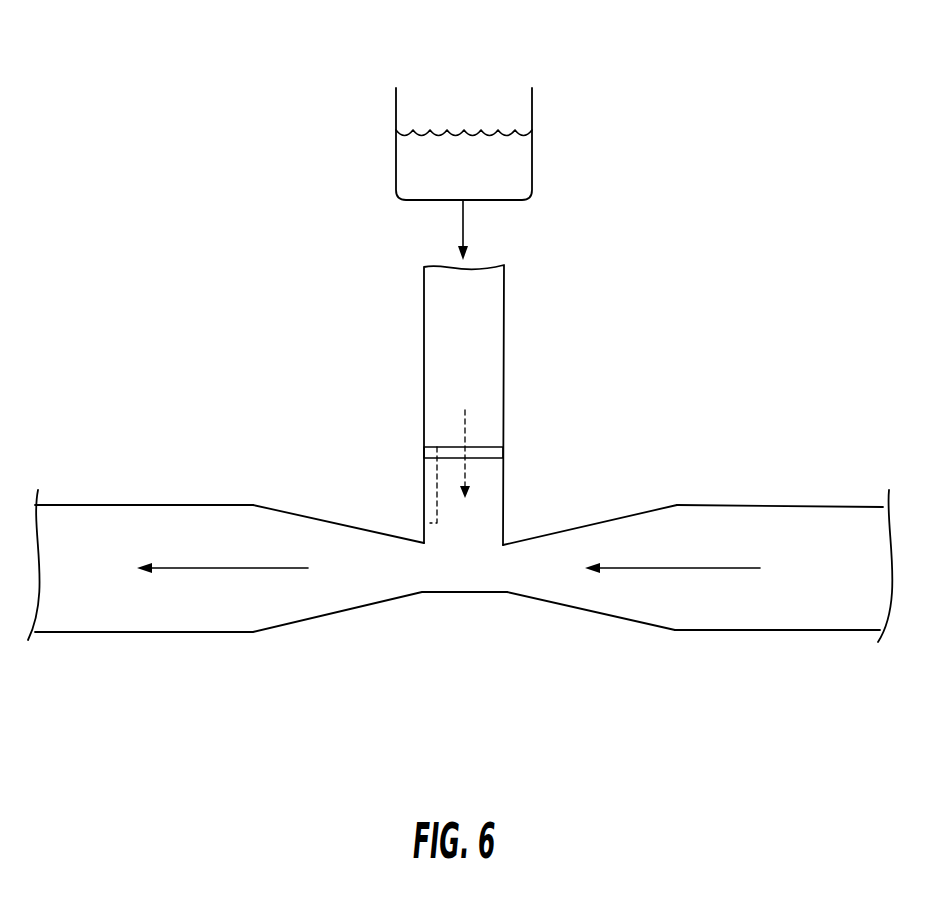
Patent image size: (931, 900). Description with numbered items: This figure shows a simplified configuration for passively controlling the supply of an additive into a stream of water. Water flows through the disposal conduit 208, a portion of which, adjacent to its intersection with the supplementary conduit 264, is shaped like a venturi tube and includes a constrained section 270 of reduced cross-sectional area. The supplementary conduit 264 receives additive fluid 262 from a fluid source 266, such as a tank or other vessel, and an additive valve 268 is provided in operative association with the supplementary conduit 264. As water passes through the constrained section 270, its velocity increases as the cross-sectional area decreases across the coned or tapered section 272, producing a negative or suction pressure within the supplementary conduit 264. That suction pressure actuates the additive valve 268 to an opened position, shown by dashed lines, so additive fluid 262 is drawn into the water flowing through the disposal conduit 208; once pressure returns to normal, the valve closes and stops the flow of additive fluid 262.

The disposal conduit 208 is at (747, 492).
The additive fluid 262 is at (450, 128).
The supplementary conduit 264 is at (520, 372).
The fluid source 266 is at (396, 153).
The additive valve 268 is at (485, 447).
The constrained section 270 is at (570, 495).
The tapered section 272 is at (673, 658).